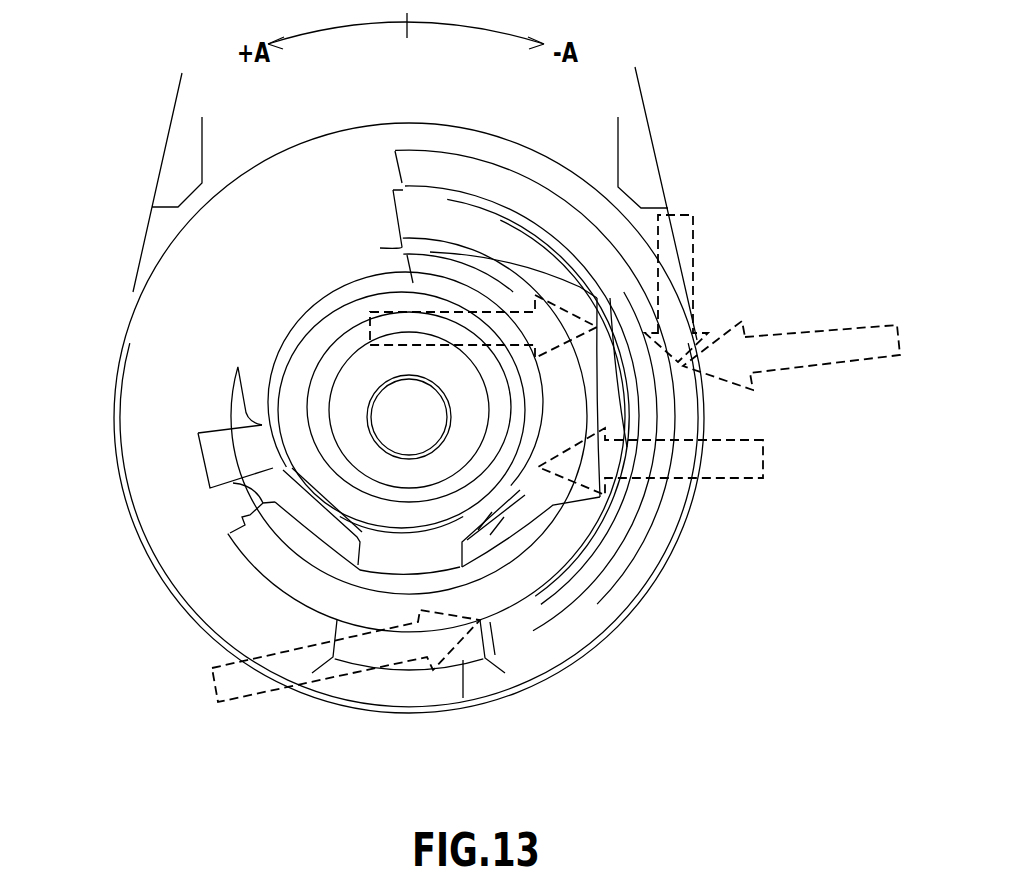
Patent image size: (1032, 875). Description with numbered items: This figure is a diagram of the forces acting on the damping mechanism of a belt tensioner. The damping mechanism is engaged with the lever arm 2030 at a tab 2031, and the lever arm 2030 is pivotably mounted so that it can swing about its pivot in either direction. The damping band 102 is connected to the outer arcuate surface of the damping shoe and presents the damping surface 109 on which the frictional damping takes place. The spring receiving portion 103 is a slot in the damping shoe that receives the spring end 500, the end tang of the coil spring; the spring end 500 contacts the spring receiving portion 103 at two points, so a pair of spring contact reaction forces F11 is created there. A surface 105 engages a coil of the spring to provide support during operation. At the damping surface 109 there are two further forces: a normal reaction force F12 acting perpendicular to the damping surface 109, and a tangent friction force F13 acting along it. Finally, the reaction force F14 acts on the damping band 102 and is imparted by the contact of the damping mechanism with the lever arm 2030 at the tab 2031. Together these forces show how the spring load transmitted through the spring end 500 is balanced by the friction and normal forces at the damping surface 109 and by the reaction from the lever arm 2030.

The damping band 102 is at (625, 540).
The spring receiving portion 103 is at (619, 418).
The surface 105 is at (228, 460).
The damping surface 109 is at (617, 590).
The spring end 500 is at (592, 404).
The lever arm 2030 is at (593, 147).
The tab 2031 is at (470, 648).
The spring contact reaction forces F11 is at (395, 322).
The normal reaction force F12 is at (862, 345).
The tangent friction force F13 is at (684, 236).
The reaction force F14 is at (218, 686).